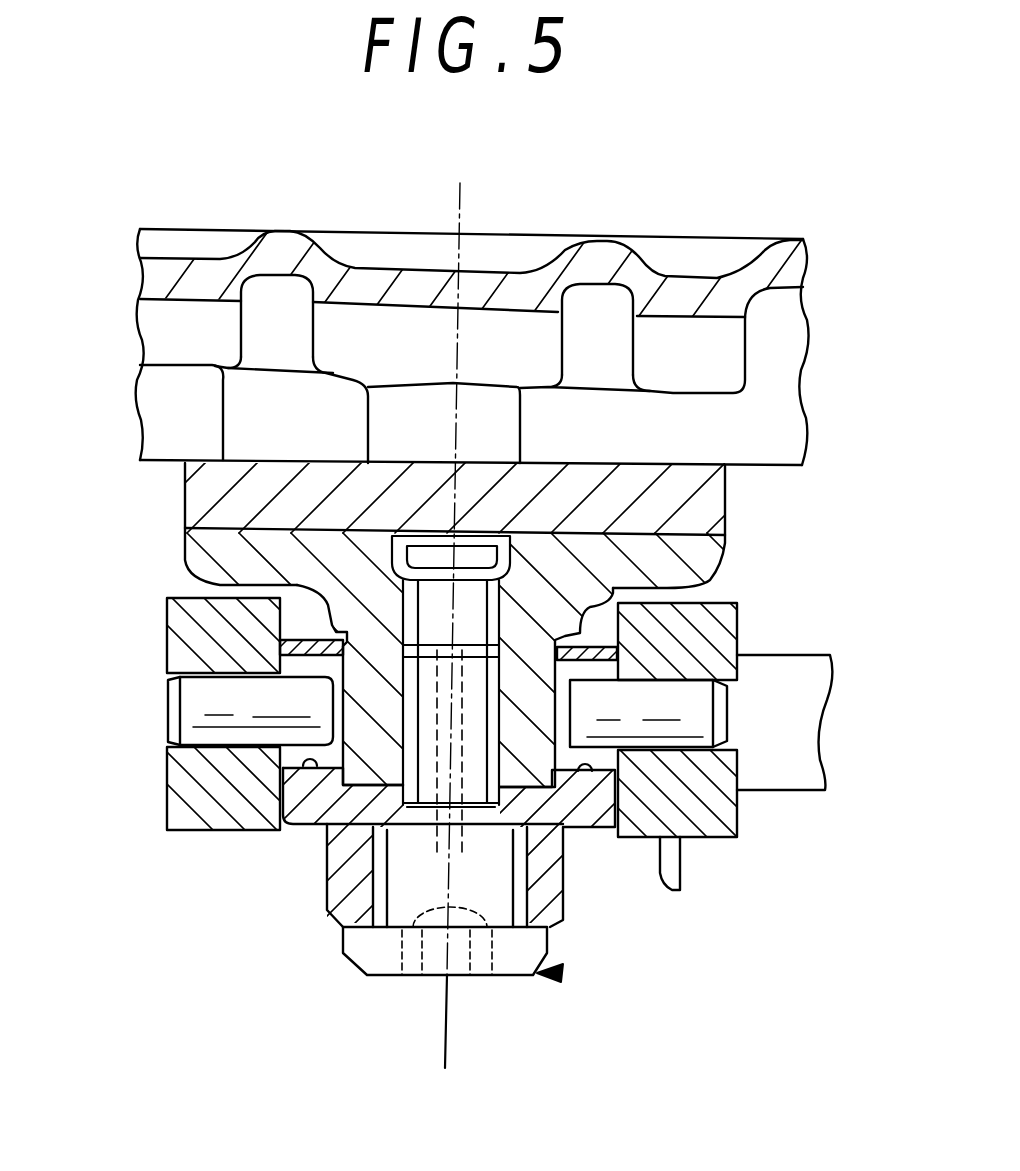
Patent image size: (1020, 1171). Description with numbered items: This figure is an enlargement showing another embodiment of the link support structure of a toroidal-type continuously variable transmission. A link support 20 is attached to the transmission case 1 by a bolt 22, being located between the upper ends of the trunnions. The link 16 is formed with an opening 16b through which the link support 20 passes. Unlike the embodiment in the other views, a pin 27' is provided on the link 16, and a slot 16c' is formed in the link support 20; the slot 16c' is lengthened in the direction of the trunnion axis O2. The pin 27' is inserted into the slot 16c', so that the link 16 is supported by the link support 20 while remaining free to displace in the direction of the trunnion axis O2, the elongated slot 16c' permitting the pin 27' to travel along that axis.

The transmission case 1 is at (492, 268).
The link 16 is at (797, 790).
The opening 16b is at (598, 585).
The slot 16c' is at (465, 877).
The link support 20 is at (327, 905).
The bolt 22 is at (558, 974).
The pin 27' is at (481, 705).
The trunnion axis O2 is at (446, 1037).